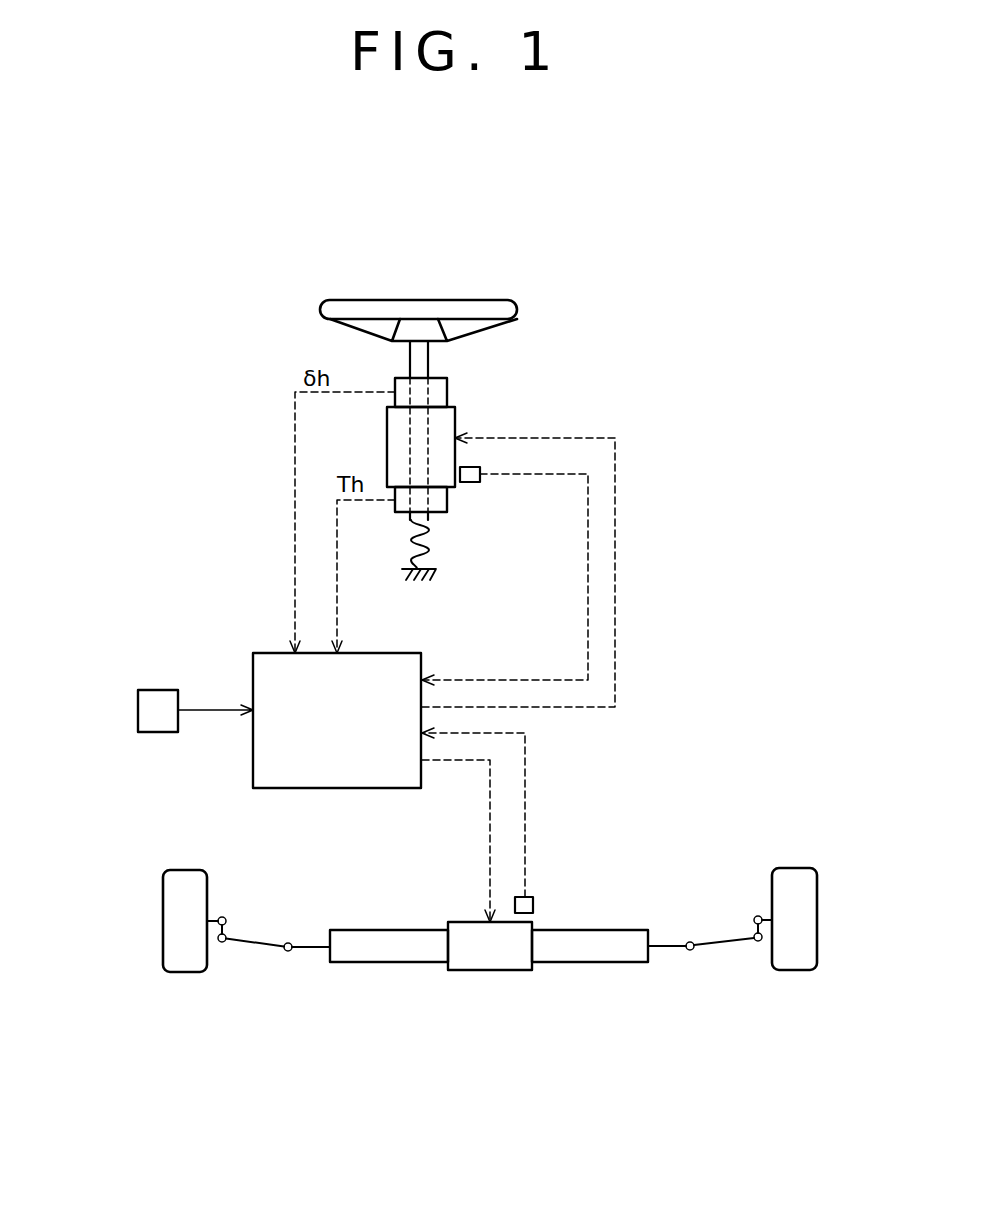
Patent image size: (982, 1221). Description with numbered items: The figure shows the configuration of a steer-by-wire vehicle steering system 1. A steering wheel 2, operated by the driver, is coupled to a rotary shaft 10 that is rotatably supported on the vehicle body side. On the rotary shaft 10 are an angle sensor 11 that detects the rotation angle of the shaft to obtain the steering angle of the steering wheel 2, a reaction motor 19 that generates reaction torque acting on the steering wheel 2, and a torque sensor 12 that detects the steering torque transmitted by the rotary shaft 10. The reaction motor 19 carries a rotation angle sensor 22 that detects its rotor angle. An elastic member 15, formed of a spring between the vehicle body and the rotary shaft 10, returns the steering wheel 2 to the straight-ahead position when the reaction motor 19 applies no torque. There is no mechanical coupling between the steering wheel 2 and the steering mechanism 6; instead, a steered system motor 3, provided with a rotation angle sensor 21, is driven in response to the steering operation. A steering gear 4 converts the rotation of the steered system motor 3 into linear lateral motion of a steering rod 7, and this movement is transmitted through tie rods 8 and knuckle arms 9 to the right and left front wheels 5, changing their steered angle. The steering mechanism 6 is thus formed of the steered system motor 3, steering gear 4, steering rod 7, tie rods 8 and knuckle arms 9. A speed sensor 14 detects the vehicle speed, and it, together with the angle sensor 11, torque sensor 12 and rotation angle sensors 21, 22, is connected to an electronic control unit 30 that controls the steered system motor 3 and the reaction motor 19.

The vehicle steering system 1 is at (623, 343).
The steering wheel 2 is at (507, 312).
The steered system motor 3 is at (493, 960).
The steering gear 4 is at (387, 955).
The front wheels 5 is at (189, 967).
The steering mechanism 6 is at (490, 978).
The steering rod 7 is at (312, 953).
The tie rods 8 is at (255, 945).
The knuckle arms 9 is at (230, 929).
The rotary shaft 10 is at (422, 362).
The angle sensor 11 is at (437, 390).
The torque sensor 12 is at (437, 502).
The speed sensor 14 is at (148, 712).
The elastic member 15 is at (428, 540).
The reaction motor 19 is at (442, 420).
The rotation angle sensor 21 is at (530, 903).
The rotation angle sensor 22 is at (467, 465).
The electronic control unit (ECU) 30 is at (379, 652).